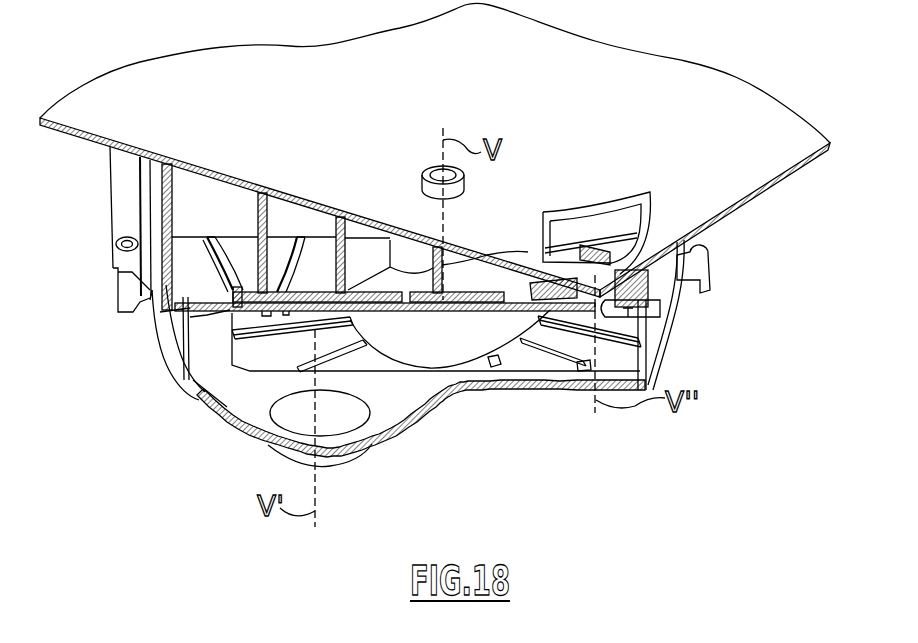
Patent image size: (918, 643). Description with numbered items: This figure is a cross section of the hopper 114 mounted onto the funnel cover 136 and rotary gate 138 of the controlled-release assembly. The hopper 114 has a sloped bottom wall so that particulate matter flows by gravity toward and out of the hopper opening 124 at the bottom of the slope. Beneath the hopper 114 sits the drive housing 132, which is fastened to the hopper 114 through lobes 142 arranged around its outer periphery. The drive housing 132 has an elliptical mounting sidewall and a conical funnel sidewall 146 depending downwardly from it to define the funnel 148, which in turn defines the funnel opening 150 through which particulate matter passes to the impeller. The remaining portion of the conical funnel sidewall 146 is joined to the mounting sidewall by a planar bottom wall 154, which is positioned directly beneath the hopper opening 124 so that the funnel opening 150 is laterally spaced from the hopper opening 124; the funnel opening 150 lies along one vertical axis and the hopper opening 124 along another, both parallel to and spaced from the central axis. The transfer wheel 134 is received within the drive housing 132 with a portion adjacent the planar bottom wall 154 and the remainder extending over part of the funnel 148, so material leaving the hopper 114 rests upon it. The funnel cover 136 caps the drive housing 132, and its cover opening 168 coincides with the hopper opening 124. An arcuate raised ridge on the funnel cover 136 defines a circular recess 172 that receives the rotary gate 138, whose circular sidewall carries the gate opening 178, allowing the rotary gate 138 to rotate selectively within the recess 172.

The hopper 114 is at (756, 189).
The hopper opening 124 is at (648, 196).
The drive housing 132 is at (203, 398).
The transfer wheel 134 is at (568, 378).
The funnel cover 136 is at (186, 315).
The rotary gate 138 is at (300, 293).
The lobes 142 is at (113, 270).
The conical funnel sidewall 146 is at (408, 418).
The funnel 148 is at (253, 403).
The funnel opening 150 is at (331, 465).
The planar bottom wall 154 is at (476, 389).
The cover opening 168 is at (575, 370).
The circular recess 172 is at (215, 270).
The gate opening 178 is at (640, 325).